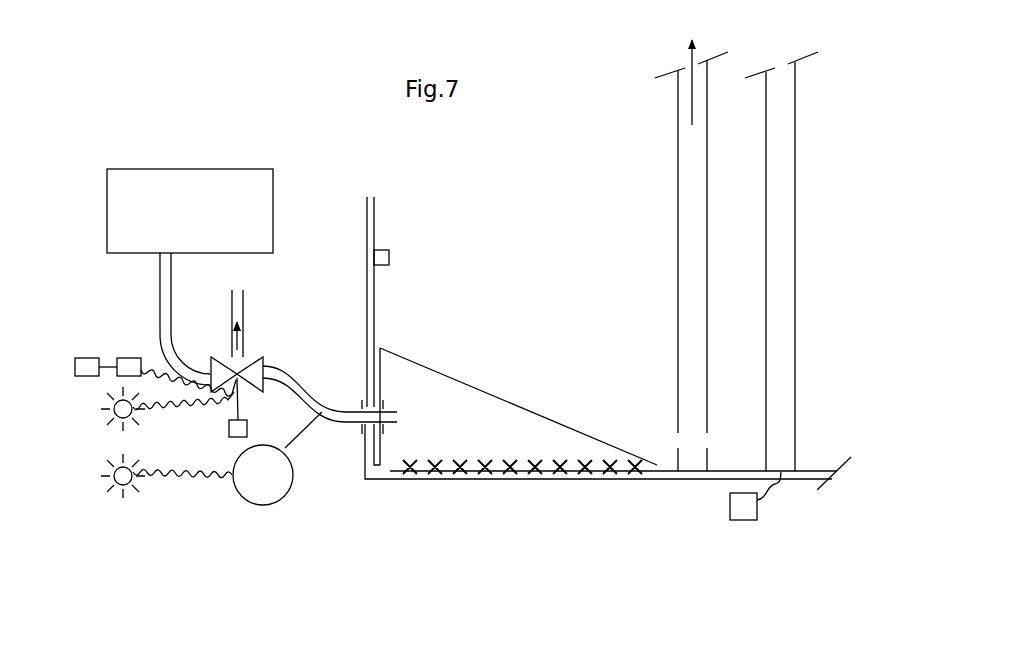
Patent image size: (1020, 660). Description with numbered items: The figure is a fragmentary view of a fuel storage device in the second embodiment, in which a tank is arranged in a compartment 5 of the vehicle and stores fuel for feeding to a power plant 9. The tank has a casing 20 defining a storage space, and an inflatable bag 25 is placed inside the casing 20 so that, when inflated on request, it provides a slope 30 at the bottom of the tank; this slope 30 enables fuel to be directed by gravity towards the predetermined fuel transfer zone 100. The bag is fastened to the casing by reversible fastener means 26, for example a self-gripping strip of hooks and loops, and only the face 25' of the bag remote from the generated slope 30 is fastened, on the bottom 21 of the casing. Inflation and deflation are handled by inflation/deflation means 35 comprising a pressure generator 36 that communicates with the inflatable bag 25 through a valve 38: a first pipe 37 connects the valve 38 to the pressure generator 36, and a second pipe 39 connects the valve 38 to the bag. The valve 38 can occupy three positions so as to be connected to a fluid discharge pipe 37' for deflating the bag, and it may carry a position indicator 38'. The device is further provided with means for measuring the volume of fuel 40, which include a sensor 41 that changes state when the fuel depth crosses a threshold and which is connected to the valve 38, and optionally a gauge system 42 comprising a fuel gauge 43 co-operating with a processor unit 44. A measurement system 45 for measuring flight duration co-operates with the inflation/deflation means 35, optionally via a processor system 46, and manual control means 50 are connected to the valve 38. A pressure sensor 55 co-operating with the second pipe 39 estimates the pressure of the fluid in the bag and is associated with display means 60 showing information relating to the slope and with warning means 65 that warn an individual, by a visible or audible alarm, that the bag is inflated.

The compartment 5 is at (364, 238).
The power plant 9 is at (691, 236).
The casing 20 is at (377, 236).
The bottom 21 is at (662, 478).
The inflatable bag 25 is at (449, 420).
The face 25' is at (613, 505).
The reversible fastener means 26 is at (546, 461).
The slope 30 is at (456, 380).
The inflation/deflation means 35 is at (145, 118).
The pressure generator 36 is at (107, 212).
The first pipe 37 is at (137, 319).
The fluid discharge pipe 37' is at (268, 311).
The valve 38 is at (269, 353).
The position indicator 38' is at (190, 411).
The second pipe 39 is at (313, 392).
The means for measuring the volume of fuel 40 is at (836, 90).
The sensor 41 is at (389, 257).
The gauge system 42 is at (836, 258).
The fuel gauge 43 is at (795, 165).
The processor unit 44 is at (745, 520).
The measurement system 45 is at (85, 358).
The processor system 46 is at (128, 358).
The manual control means 50 is at (100, 415).
The pressure sensor 55 is at (290, 495).
The display means 60 is at (98, 490).
The warning means 65 is at (112, 504).
The fuel transfer zone 100 is at (737, 444).